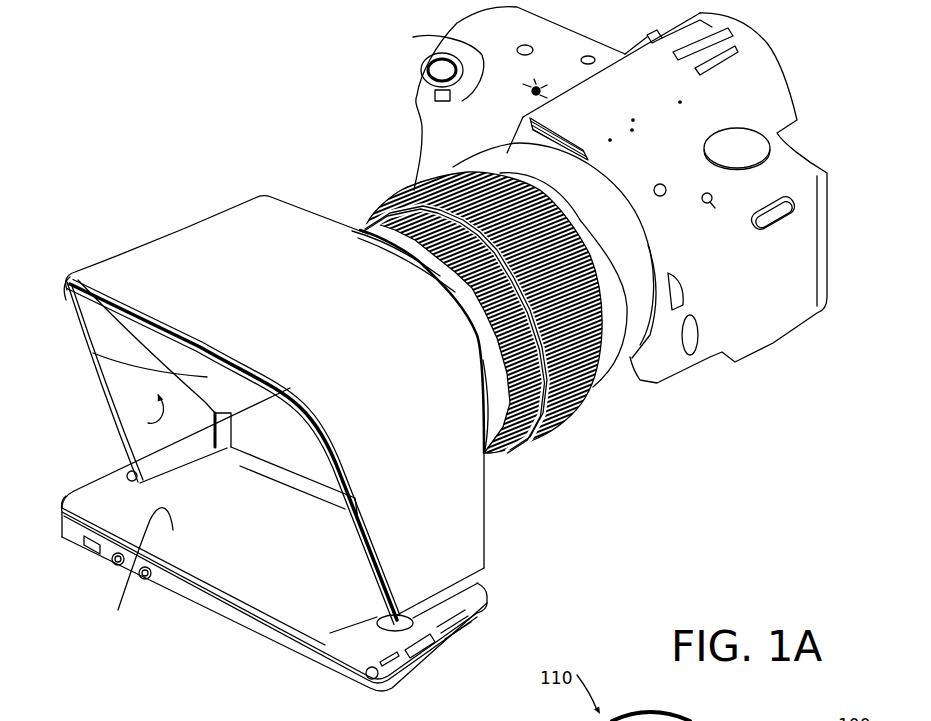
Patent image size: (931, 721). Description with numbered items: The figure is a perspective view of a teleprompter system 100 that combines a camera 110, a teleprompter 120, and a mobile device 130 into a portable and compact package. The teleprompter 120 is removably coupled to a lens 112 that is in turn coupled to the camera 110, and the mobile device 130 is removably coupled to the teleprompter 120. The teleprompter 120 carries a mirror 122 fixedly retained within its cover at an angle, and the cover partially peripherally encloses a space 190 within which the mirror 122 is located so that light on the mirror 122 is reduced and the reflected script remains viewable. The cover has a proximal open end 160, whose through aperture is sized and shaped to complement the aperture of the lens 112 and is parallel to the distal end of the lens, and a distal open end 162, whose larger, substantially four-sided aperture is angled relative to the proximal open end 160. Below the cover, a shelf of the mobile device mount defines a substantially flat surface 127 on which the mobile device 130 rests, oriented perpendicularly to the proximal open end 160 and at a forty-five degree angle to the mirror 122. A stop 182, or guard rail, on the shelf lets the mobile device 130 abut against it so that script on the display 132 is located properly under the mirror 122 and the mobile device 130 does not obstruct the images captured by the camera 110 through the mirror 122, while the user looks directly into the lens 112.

The teleprompter system 100 is at (243, 78).
The camera 110 is at (439, 38).
The lens 112 is at (370, 232).
The teleprompter 120 is at (211, 211).
The mirror 122 is at (87, 353).
The flat surface 127 is at (481, 577).
The mobile device 130 is at (81, 478).
The display 132 is at (122, 558).
The proximal open end 160 is at (485, 520).
The distal open end 162 is at (115, 420).
The stop 182 is at (275, 480).
The space 190 is at (93, 390).